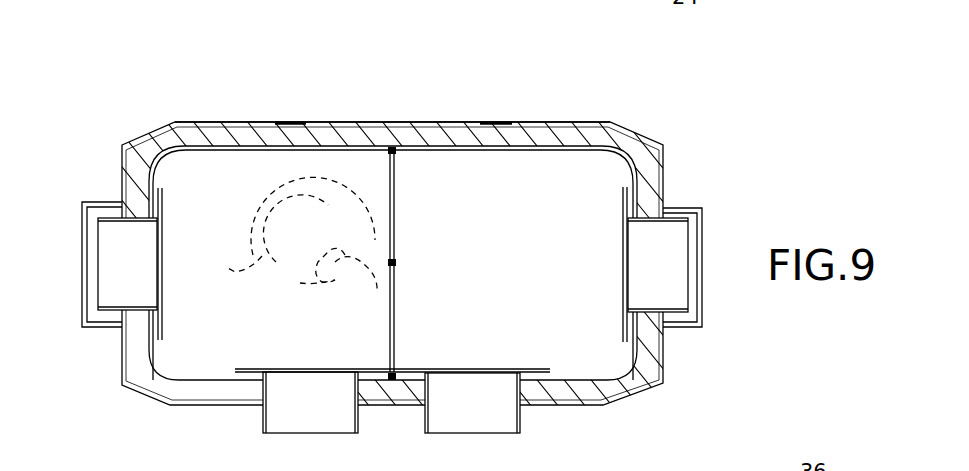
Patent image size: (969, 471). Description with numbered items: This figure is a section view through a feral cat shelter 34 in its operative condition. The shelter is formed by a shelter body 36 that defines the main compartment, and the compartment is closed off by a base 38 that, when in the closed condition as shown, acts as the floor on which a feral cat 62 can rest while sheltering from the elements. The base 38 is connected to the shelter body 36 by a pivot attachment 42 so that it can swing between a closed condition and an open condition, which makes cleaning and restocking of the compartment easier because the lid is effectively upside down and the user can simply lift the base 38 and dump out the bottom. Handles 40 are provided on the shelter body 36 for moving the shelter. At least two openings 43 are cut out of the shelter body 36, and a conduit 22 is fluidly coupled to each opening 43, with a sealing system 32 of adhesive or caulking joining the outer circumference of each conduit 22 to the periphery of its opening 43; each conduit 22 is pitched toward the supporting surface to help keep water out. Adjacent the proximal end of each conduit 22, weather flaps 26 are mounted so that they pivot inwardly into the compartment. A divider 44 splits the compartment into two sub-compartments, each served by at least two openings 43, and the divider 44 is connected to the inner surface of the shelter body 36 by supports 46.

The feral cat shelter 34 is at (144, 74).
The conduit 22 is at (97, 262).
The weather flaps 26 is at (163, 194).
The sealing system 32 is at (262, 407).
The shelter body 36 is at (392, 122).
The base 38 is at (540, 236).
The handles 40 is at (95, 202).
The pivot attachment 42 is at (295, 121).
The openings 43 is at (125, 335).
The divider 44 is at (396, 318).
The supports 46 is at (397, 151).
The feral cats 62 is at (258, 276).